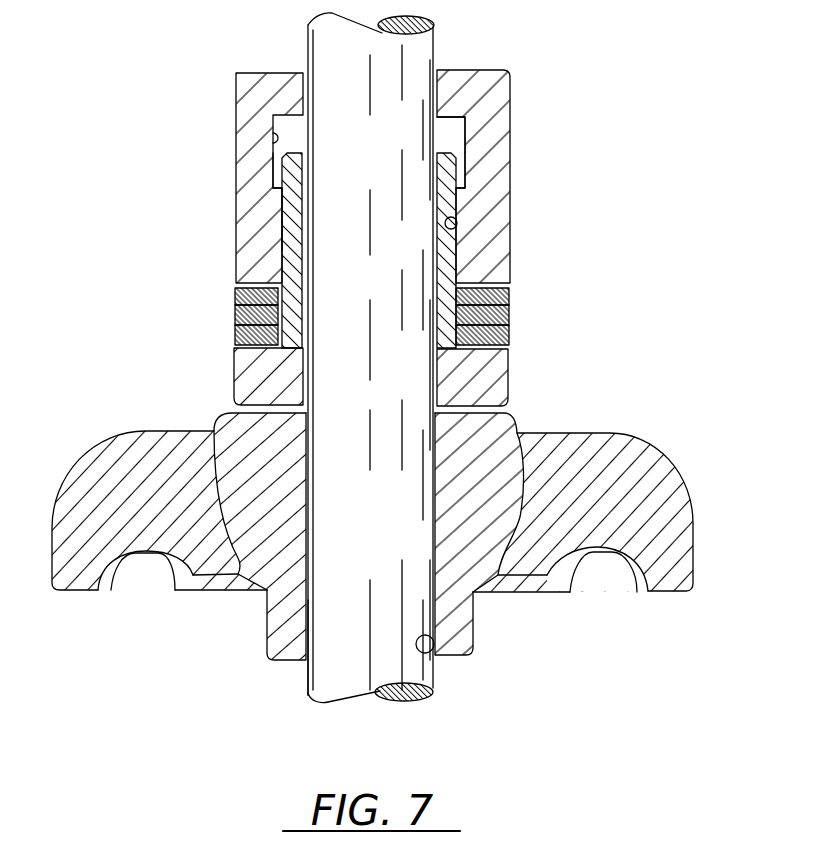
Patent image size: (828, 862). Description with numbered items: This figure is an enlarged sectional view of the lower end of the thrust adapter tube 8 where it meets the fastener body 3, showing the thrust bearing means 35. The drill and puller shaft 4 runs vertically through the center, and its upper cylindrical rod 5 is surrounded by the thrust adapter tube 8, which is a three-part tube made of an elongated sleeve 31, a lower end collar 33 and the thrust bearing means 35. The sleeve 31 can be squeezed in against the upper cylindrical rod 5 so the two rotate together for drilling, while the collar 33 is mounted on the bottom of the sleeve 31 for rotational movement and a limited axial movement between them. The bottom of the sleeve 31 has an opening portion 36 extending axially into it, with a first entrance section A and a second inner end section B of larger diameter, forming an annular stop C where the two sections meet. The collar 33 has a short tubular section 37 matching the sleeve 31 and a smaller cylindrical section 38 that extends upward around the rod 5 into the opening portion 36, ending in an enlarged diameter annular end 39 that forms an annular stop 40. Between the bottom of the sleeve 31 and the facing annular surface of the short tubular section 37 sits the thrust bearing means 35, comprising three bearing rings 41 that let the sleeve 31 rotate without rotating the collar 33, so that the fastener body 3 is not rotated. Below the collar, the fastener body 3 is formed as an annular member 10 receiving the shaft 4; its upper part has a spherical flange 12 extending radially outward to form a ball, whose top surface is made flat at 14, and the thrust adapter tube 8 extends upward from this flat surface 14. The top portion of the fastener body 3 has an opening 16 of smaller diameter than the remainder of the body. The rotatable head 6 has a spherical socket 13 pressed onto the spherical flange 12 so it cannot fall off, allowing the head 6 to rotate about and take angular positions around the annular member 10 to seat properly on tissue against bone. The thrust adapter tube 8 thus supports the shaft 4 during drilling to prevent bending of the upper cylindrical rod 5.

The fastener body 3 is at (475, 620).
The drill and puller shaft 4 is at (307, 677).
The upper cylindrical rod 5 is at (325, 62).
The rotatable head 6 is at (627, 440).
The thrust adapter tube 8 is at (504, 94).
The annular member 10 is at (265, 630).
The spherical flange 12 is at (228, 414).
The spherical socket 13 is at (492, 550).
The top flat surface 14 is at (508, 413).
The opening 16 is at (434, 653).
The elongated sleeve 31 is at (245, 108).
The lower end collar 33 is at (512, 375).
The thrust bearing means 35 is at (222, 287).
The opening portion 36 is at (455, 135).
The short tubular section 37 is at (255, 368).
The smaller cylindrical section 38 is at (290, 240).
The enlarged diameter annular end 39 is at (272, 186).
The annular stop 40 is at (283, 215).
The bearing rings 41 is at (510, 337).
The first entrance section A is at (455, 225).
The second inner end section B is at (276, 140).
The annular stop C is at (462, 185).